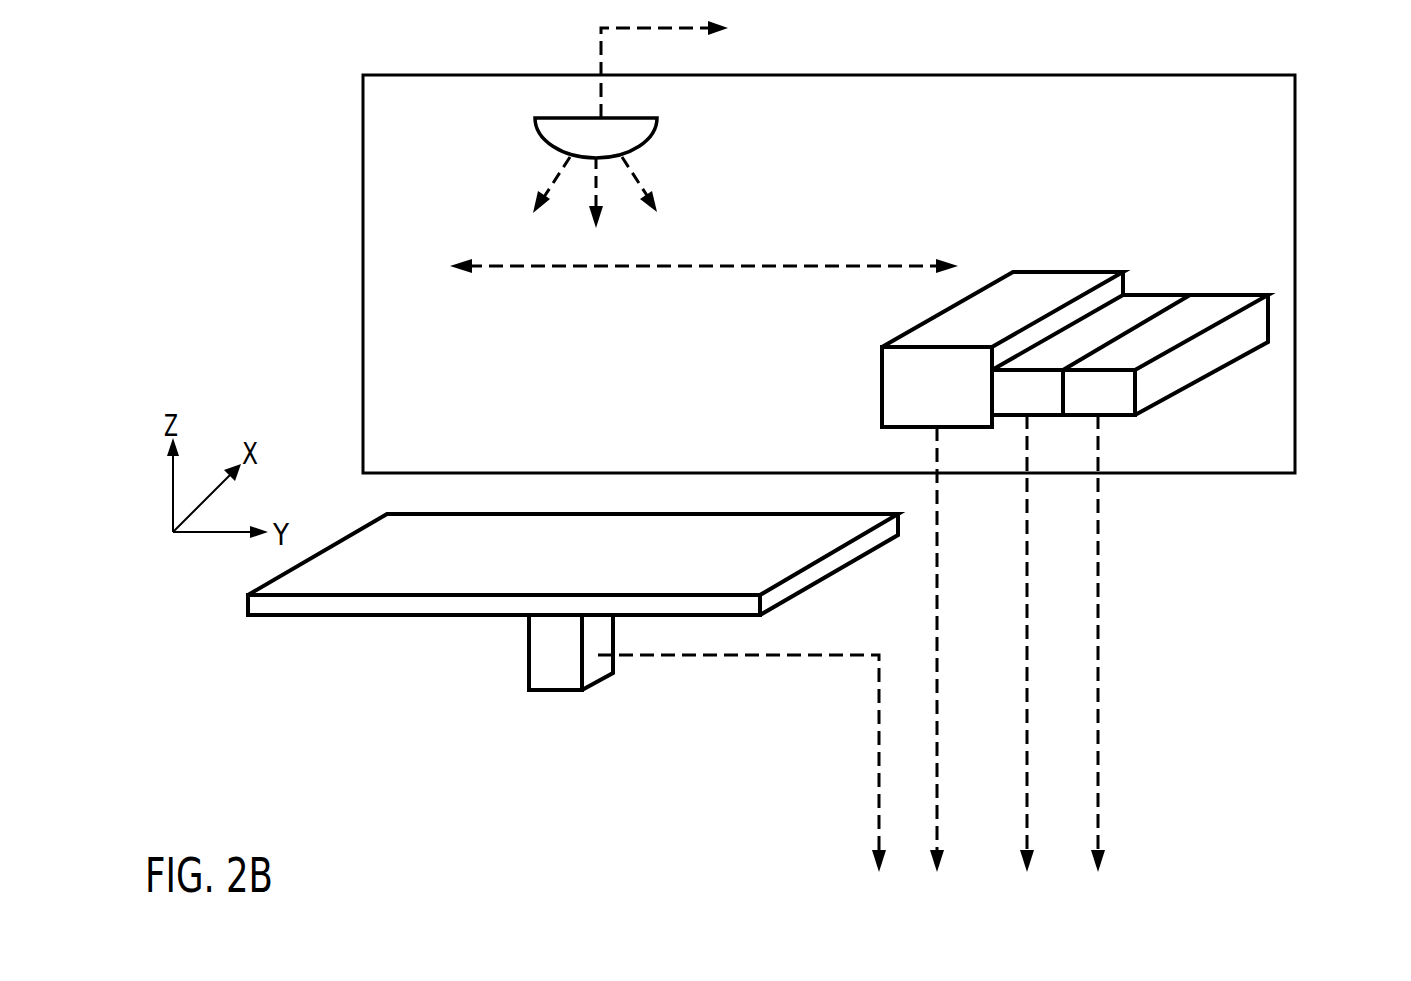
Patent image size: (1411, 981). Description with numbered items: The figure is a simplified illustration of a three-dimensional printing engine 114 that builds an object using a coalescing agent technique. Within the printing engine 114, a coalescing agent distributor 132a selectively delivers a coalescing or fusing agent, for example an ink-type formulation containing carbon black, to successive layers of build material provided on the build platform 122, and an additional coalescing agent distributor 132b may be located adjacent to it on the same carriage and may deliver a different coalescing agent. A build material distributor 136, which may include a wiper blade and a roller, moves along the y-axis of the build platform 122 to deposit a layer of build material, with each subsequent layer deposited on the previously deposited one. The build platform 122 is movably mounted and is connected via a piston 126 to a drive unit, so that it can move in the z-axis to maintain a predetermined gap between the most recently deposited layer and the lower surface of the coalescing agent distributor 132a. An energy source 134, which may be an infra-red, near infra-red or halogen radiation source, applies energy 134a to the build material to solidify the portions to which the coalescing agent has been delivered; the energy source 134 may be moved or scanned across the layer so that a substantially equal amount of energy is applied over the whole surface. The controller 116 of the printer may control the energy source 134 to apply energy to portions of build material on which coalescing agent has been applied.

The 3D printing engine 114 is at (1295, 273).
The controller 116 is at (1127, 870).
The build platform 122 is at (595, 567).
The piston 126 is at (558, 690).
The coalescing agent distributor 132a is at (1155, 295).
The additional coalescing agent distributor 132b is at (1228, 295).
The energy source 134 is at (652, 133).
The energy 134a is at (553, 185).
The build material distributor 136 is at (1062, 272).